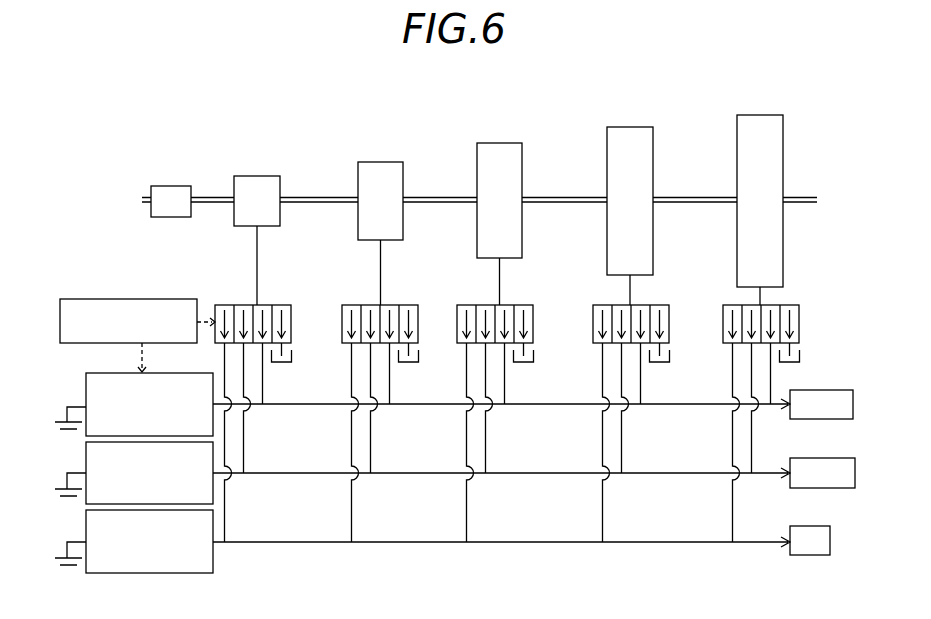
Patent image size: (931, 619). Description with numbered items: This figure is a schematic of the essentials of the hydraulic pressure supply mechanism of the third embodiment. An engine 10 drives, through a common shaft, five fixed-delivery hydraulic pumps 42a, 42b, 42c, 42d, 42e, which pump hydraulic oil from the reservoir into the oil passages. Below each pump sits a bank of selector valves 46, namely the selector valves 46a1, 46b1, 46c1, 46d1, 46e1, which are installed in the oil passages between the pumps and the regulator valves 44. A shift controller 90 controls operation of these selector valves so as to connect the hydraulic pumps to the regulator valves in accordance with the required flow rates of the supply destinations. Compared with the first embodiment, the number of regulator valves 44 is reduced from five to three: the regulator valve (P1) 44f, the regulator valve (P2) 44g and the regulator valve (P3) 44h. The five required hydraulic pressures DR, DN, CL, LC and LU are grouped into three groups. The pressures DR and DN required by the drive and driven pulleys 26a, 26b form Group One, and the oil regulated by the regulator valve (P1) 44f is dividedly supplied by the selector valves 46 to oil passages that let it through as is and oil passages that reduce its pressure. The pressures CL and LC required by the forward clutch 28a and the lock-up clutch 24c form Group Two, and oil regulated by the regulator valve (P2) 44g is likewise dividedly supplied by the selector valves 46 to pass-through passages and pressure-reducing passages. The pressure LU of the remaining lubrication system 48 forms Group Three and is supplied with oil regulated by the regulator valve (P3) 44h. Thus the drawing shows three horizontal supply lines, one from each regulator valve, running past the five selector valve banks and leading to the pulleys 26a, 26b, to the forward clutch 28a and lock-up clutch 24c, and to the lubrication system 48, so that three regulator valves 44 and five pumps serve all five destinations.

The engine 10 is at (170, 186).
The fixed-delivery pump 42a is at (275, 176).
The fixed-delivery pump 42b is at (400, 162).
The fixed-delivery pump 42c is at (520, 143).
The fixed-delivery pump 42d is at (650, 127).
The fixed-delivery pump 42e is at (780, 115).
The selector valves 46 is at (234, 264).
The selector valve 46a1 is at (280, 304).
The selector valve 46b1 is at (397, 304).
The selector valve 46c1 is at (525, 304).
The selector valve 46d1 is at (660, 304).
The selector valve 46e1 is at (785, 304).
The shift controller 90 is at (176, 299).
The regulator valves 44 is at (77, 362).
The regulator valve (P1) 44f is at (86, 393).
The regulator valve (P2) 44g is at (86, 458).
The regulator valve (P3) 44h is at (86, 523).
The drive pulley 26a is at (822, 392).
The driven pulley 26b is at (790, 371).
The forward clutch 28a is at (821, 458).
The lock-up clutch 24c is at (786, 456).
The lubrication system 48 is at (796, 526).